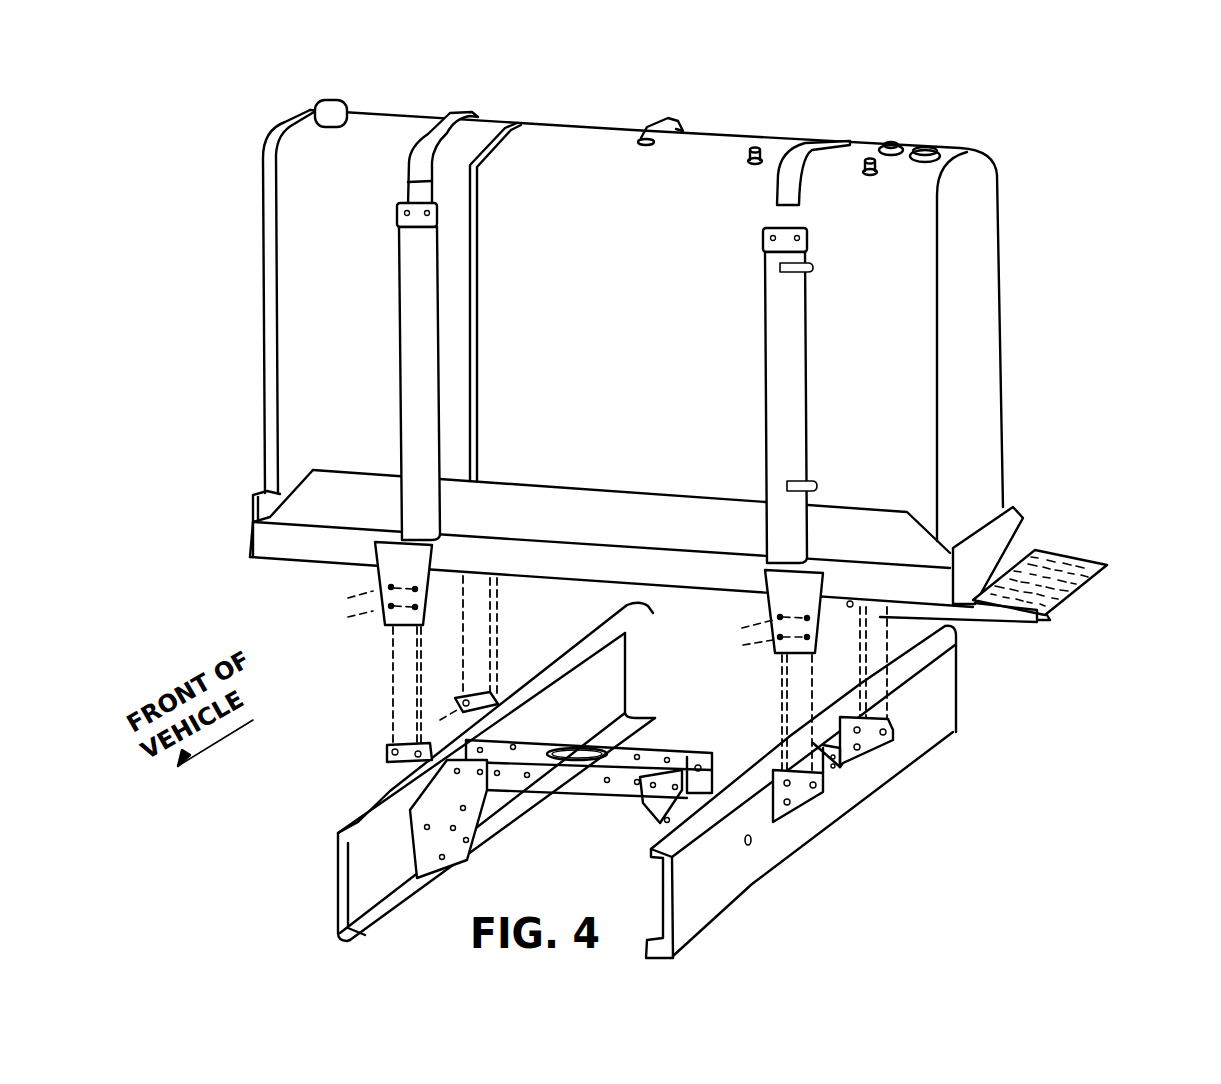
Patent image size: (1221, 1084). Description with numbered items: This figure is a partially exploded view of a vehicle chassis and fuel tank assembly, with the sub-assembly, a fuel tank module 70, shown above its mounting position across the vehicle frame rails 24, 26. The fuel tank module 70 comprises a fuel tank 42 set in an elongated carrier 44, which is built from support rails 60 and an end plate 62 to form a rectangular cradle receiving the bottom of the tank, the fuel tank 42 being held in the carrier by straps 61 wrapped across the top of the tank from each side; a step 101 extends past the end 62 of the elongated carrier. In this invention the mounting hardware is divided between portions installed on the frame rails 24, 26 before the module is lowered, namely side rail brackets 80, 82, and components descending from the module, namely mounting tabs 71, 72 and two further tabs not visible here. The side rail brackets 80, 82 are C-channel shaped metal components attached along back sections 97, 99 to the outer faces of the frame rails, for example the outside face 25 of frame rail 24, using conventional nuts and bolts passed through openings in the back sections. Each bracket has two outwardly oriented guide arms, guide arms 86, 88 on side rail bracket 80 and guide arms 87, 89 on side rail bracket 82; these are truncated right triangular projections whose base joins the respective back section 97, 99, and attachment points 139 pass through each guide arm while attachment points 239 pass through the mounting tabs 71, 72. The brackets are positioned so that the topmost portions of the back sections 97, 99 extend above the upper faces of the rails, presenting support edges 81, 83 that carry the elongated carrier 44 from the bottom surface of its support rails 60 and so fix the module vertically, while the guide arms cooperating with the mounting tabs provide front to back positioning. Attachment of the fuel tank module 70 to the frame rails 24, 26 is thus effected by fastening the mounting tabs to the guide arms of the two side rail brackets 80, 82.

The fuel tank module 70 is at (1087, 188).
The fuel tank 42 is at (1003, 330).
The straps 61 is at (833, 142).
The end plate 62 is at (1013, 507).
The elongated carrier 44 is at (250, 550).
The support rails 60 is at (307, 550).
The attachment points 239 is at (838, 595).
The step 101 is at (1020, 621).
The mounting tab 71 is at (383, 625).
The mounting tab 72 is at (767, 645).
The support edge 83 is at (510, 697).
The guide arm 89 is at (463, 693).
The back section 97 is at (862, 722).
The frame rail 24 is at (953, 732).
The outside face 25 is at (735, 898).
The frame rail 26 is at (342, 868).
The back section 99 is at (500, 722).
The guide arm 87 is at (412, 760).
The side rail bracket 82 is at (385, 752).
The support edge 81 is at (797, 750).
The guide arm 88 is at (887, 743).
The attachment points 139 is at (880, 748).
The side rail bracket 80 is at (847, 777).
The guide arm 86 is at (807, 807).